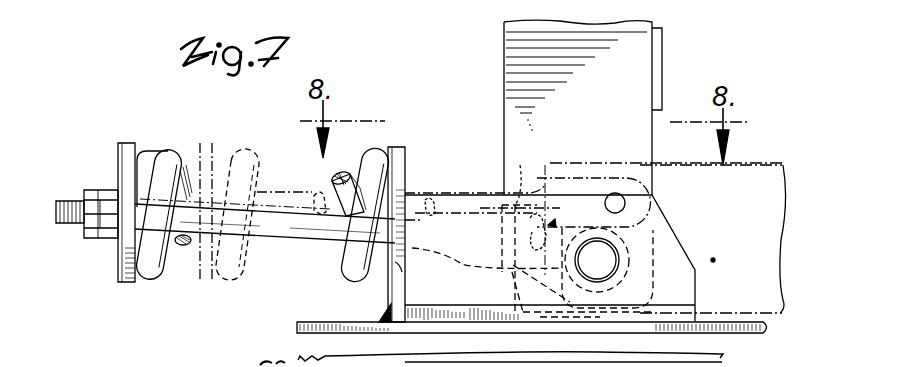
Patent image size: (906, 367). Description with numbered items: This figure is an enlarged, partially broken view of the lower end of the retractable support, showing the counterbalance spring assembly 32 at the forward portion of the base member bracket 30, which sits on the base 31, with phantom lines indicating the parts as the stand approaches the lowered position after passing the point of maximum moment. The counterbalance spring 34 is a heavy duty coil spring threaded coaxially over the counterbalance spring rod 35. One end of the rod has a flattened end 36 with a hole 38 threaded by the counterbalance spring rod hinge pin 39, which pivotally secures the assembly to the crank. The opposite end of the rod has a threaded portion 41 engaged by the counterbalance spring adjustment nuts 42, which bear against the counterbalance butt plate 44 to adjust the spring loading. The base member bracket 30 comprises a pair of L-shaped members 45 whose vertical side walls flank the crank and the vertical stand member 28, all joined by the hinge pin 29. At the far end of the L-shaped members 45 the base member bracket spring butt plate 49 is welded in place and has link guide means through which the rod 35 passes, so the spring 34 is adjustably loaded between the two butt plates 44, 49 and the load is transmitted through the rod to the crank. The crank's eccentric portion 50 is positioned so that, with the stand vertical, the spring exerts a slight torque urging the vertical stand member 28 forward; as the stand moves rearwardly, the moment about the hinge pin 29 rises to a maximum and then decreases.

The vertical stand member 28 is at (582, 58).
The hinge pin 29 is at (606, 262).
The base member bracket 30 is at (416, 186).
The base 31 is at (762, 338).
The counterbalance spring assembly 32 is at (255, 144).
The counterbalance spring 34 is at (168, 165).
The counterbalance spring rod 35 is at (270, 232).
The flattened end 36 is at (474, 256).
The hole 38 is at (546, 185).
The counterbalance spring rod hinge pin 39 is at (557, 222).
The threaded portion 41 is at (68, 201).
The counterbalance spring adjustment nuts 42 is at (104, 190).
The counterbalance butt plate 44 is at (126, 248).
The L-shaped members 45 is at (415, 272).
The base member bracket spring butt plate 49 is at (405, 147).
The eccentric portion 50 is at (521, 205).